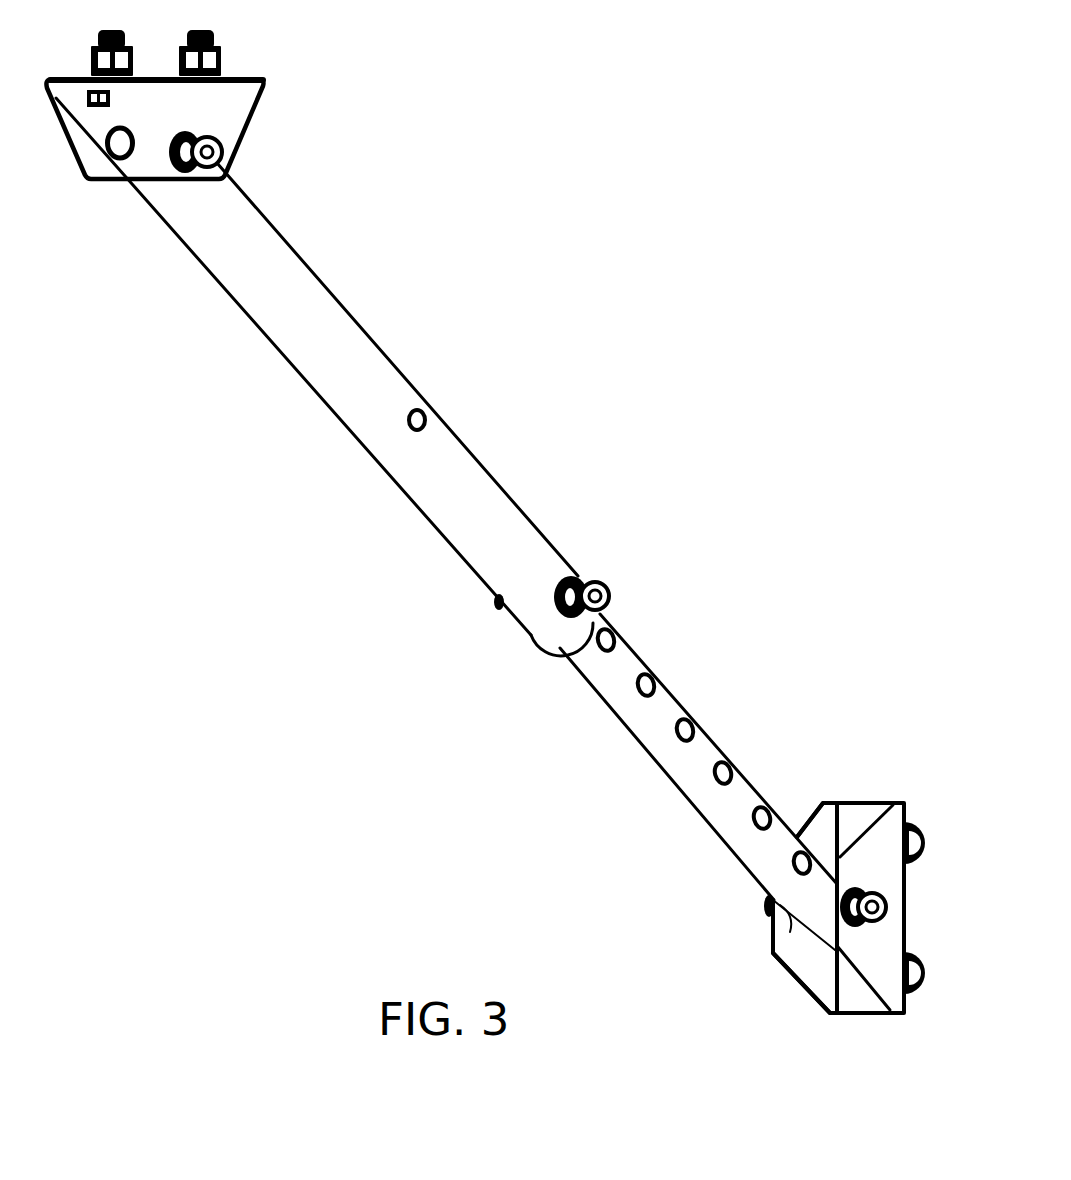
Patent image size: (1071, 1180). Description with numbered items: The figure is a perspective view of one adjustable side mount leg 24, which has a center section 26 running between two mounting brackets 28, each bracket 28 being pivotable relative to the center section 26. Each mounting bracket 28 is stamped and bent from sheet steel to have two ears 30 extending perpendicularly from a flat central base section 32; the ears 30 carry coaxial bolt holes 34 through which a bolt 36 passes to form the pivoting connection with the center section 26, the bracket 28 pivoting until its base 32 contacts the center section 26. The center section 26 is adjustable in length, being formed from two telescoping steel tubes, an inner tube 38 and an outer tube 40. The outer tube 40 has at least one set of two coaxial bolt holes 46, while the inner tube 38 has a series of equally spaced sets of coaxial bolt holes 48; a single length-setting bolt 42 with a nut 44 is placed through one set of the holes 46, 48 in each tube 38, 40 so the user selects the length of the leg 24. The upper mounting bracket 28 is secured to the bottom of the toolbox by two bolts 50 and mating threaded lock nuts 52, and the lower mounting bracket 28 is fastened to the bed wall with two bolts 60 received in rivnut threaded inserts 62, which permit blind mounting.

The leg 24 is at (582, 176).
The center section 26 is at (582, 515).
The mounting bracket 28 is at (220, 151).
The ear 30 is at (243, 100).
The base section 32 is at (166, 78).
The bolt hole 34 is at (177, 164).
The bolt 36 is at (222, 168).
The inner tube 38 is at (703, 750).
The outer tube 40 is at (303, 298).
The bolt 42 is at (497, 603).
The nut 44 is at (581, 575).
The bolt holes 46 is at (421, 417).
The bolt holes 48 is at (661, 683).
The bolt 50 is at (199, 30).
The lock nut 52 is at (90, 60).
The bolt 60 is at (832, 838).
The rivnut threaded insert 62 is at (914, 826).